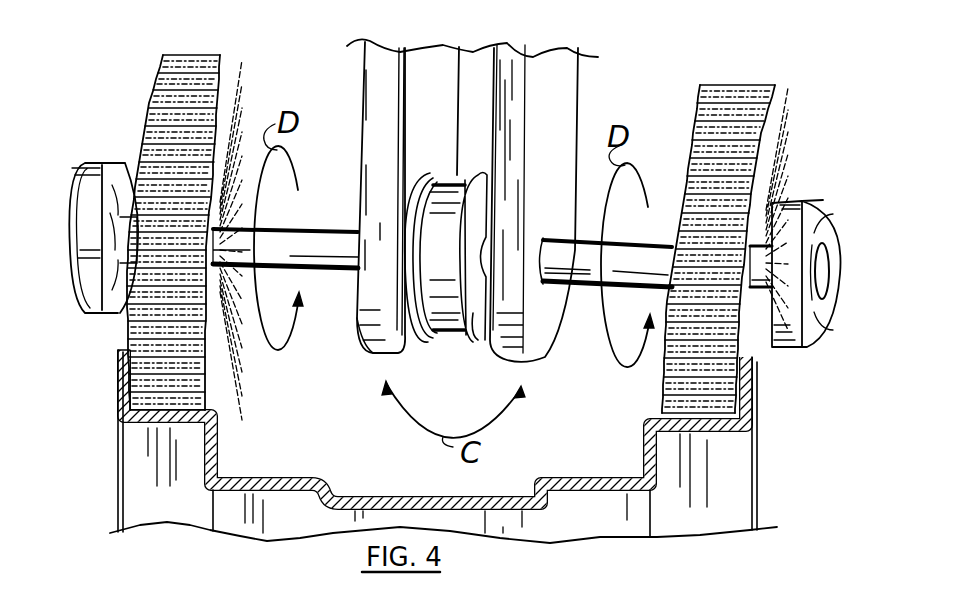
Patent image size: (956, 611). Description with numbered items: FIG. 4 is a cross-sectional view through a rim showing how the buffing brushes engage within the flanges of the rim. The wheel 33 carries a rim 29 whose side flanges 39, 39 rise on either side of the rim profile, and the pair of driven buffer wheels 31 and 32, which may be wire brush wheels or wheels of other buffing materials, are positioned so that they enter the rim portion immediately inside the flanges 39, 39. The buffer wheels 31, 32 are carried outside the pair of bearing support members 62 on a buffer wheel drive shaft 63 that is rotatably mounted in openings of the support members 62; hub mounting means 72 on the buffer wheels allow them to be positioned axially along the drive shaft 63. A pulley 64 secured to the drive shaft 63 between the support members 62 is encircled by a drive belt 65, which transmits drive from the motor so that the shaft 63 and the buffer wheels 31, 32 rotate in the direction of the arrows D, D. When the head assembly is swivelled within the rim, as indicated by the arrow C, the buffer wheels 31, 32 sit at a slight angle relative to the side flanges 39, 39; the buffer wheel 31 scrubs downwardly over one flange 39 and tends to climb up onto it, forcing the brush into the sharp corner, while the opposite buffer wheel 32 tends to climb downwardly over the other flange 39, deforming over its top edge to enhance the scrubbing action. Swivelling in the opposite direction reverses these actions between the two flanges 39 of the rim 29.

The rim 29 is at (440, 497).
The buffer wheel 31 is at (152, 97).
The buffer wheel 32 is at (728, 88).
The wheel 33 is at (755, 487).
The flange 39 is at (118, 416).
The bearing support member 62 is at (378, 97).
The buffer wheel drive shaft 63 is at (303, 226).
The pulley 64 is at (480, 345).
The drive belt 65 is at (427, 313).
The hub mounting means 72 is at (86, 312).